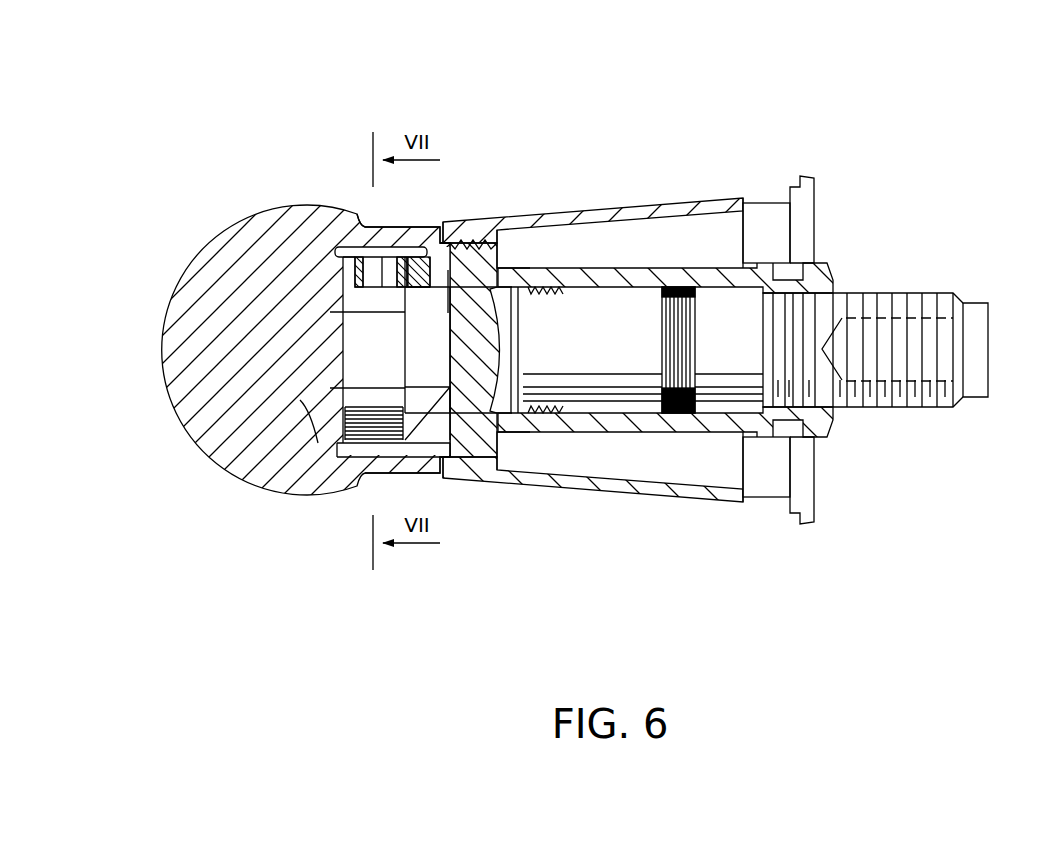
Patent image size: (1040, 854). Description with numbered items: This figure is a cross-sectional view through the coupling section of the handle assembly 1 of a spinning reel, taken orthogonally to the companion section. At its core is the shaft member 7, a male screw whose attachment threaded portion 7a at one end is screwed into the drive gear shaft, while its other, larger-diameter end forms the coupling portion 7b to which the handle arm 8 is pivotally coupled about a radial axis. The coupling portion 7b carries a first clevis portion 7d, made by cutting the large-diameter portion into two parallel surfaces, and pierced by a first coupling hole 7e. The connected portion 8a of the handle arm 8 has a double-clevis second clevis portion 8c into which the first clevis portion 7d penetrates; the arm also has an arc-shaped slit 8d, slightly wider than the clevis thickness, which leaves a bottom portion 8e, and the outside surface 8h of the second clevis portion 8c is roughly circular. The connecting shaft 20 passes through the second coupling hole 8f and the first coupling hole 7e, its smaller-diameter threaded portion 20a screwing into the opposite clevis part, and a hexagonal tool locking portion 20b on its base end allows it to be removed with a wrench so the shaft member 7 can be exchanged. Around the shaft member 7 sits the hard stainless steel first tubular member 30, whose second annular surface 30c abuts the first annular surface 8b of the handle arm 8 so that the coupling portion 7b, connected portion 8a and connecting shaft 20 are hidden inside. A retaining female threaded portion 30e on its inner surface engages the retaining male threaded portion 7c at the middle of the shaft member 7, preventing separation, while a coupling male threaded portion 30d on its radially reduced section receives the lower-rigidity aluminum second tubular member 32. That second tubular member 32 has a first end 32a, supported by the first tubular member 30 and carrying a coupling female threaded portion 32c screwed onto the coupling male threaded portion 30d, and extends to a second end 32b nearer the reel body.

The handle assembly 1 is at (541, 168).
The shaft member 7 is at (860, 275).
The attachment threaded portion 7a is at (906, 292).
The coupling portion 7b is at (272, 205).
The retaining male threaded portion 7c is at (677, 287).
The first clevis portion 7d is at (268, 496).
The first coupling hole 7e is at (291, 390).
The handle arm 8 is at (166, 453).
The connected portion 8a is at (442, 414).
The first annular surface 8b is at (351, 212).
The second clevis portion 8c is at (429, 462).
The arc-shaped slit 8d is at (322, 334).
The bottom portion 8e is at (323, 295).
The second coupling hole 8f is at (485, 232).
The outside surface 8h is at (307, 350).
The connecting shaft 20 is at (422, 225).
The threaded portion 20a is at (352, 465).
The tool locking portion 20b is at (295, 205).
The first tubular member 30 is at (686, 449).
The second annular surface 30c is at (327, 207).
The coupling male threaded portion 30d is at (808, 522).
The retaining female threaded portion 30e is at (560, 293).
The second tubular member 32 is at (687, 170).
The first end 32a is at (471, 222).
The second end 32b is at (792, 183).
The coupling female threaded portion 32c is at (500, 437).